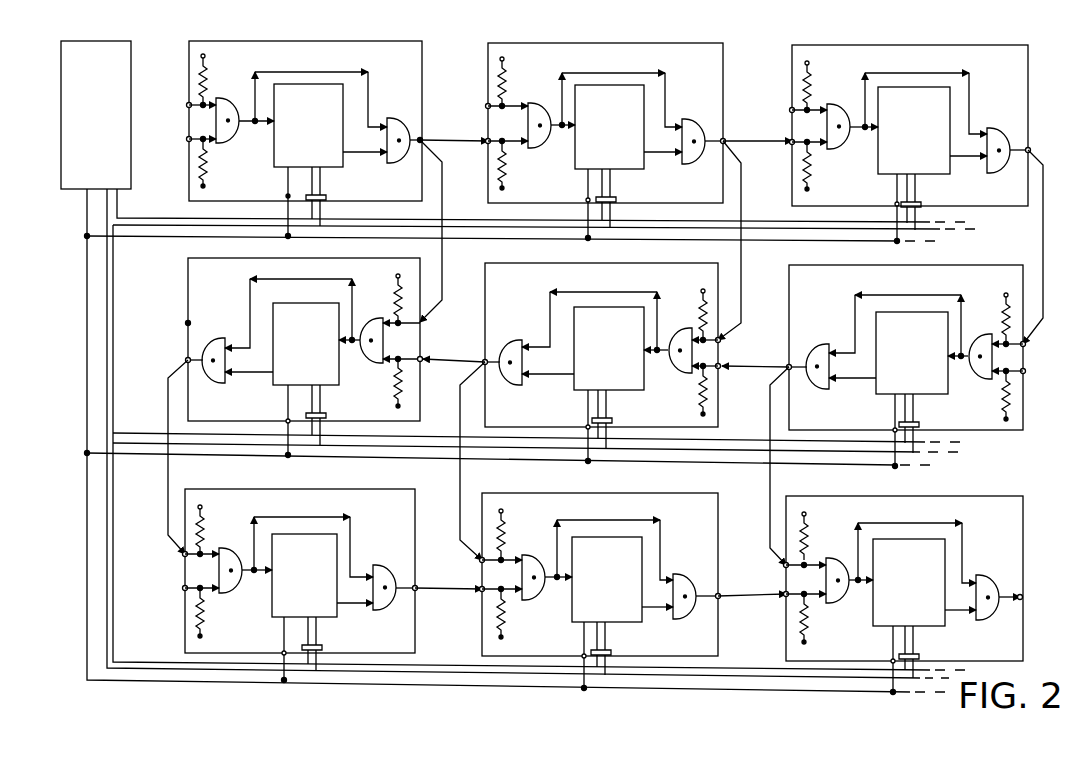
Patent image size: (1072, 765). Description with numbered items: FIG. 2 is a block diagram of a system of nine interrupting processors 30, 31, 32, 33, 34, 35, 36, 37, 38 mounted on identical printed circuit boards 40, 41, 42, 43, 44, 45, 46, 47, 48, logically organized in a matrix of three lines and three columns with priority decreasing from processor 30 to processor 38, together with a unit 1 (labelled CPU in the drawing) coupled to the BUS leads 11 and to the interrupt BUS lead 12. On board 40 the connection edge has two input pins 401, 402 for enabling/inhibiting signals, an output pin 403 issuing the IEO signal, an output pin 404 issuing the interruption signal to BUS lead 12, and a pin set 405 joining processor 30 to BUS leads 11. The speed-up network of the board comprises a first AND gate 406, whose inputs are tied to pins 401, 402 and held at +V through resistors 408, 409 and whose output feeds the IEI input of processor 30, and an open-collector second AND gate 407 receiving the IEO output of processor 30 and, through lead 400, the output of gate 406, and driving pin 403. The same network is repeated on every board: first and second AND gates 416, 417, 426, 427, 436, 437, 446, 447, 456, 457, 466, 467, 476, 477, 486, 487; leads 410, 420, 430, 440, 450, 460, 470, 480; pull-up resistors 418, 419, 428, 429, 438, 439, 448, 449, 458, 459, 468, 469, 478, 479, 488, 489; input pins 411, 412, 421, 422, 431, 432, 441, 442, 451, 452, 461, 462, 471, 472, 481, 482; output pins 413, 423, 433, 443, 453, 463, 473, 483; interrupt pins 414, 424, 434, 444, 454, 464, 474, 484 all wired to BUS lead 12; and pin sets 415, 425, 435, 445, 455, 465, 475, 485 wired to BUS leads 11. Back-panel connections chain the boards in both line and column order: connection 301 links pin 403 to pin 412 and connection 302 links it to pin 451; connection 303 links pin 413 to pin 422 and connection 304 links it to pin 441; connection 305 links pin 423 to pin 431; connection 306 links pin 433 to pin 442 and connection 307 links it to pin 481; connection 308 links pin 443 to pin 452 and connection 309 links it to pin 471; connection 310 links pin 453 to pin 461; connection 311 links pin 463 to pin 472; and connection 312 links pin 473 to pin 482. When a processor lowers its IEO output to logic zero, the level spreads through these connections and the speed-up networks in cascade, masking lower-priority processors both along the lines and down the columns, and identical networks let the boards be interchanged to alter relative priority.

The CPU 1 is at (76, 191).
The BUS leads 11 is at (140, 218).
The BUS lead 12 is at (135, 238).
The interrupting processor 30 is at (273, 139).
The interrupting processor 31 is at (572, 157).
The interrupting processor 32 is at (876, 157).
The interrupting processor 33 is at (875, 394).
The interrupting processor 34 is at (572, 390).
The interrupting processor 35 is at (270, 385).
The interrupting processor 36 is at (270, 608).
The interrupting processor 37 is at (570, 614).
The interrupting processor 38 is at (872, 612).
The printed circuit board 40 is at (188, 51).
The printed circuit board 41 is at (488, 55).
The printed circuit board 42 is at (792, 55).
The printed circuit board 43 is at (789, 291).
The printed circuit board 44 is at (485, 291).
The printed circuit board 45 is at (187, 280).
The printed circuit board 46 is at (196, 491).
The printed circuit board 47 is at (502, 492).
The printed circuit board 48 is at (821, 494).
The connection 301 is at (454, 129).
The connection 302 is at (444, 249).
The connection 303 is at (757, 133).
The connection 304 is at (742, 258).
The connection 305 is at (1043, 237).
The connection 306 is at (755, 392).
The connection 307 is at (762, 475).
The connection 308 is at (458, 395).
The connection 309 is at (457, 476).
The connection 310 is at (168, 408).
The connection 311 is at (445, 595).
The connection 312 is at (748, 601).
The lead 400 is at (339, 72).
The input pin 401 is at (188, 105).
The input pin 402 is at (188, 139).
The output pin 403 is at (431, 136).
The output pin 404 is at (287, 196).
The input/output pin set 405 is at (327, 197).
The first AND gate 406 is at (233, 95).
The second AND gate 407 is at (395, 116).
The resistor 408 is at (208, 70).
The resistor 409 is at (210, 167).
The lead 410 is at (629, 73).
The input pin 411 is at (487, 104).
The input pin 412 is at (487, 144).
The output pin 413 is at (726, 137).
The output pin 414 is at (586, 200).
The input/output pin set 415 is at (612, 199).
The first AND gate 416 is at (533, 94).
The second AND gate 417 is at (691, 118).
The resistor 418 is at (515, 79).
The resistor 419 is at (512, 164).
The lead 420 is at (931, 73).
The input pin 421 is at (791, 108).
The input pin 422 is at (791, 145).
The output pin 423 is at (1030, 150).
The output pin 424 is at (895, 204).
The input/output pin set 425 is at (920, 202).
The first AND gate 426 is at (838, 100).
The second AND gate 427 is at (998, 126).
The resistor 428 is at (812, 83).
The resistor 429 is at (819, 165).
The lead 430 is at (930, 295).
The input pin 431 is at (1027, 345).
The input pin 432 is at (1027, 372).
The output pin 433 is at (787, 366).
The output pin 434 is at (894, 428).
The input/output pin set 435 is at (920, 424).
The first AND gate 436 is at (988, 331).
The second AND gate 437 is at (813, 351).
The resistor 438 is at (1003, 310).
The resistor 439 is at (1000, 405).
The lead 440 is at (627, 292).
The input pin 441 is at (721, 340).
The input pin 442 is at (755, 371).
The output pin 443 is at (483, 360).
The output pin 444 is at (586, 425).
The input/output pin set 445 is at (610, 420).
The first AND gate 446 is at (688, 328).
The second AND gate 447 is at (511, 341).
The resistor 448 is at (699, 305).
The resistor 449 is at (698, 398).
The lead 450 is at (310, 283).
The input pin 451 is at (423, 321).
The input pin 452 is at (452, 371).
The output pin 453 is at (186, 360).
The output pin 454 is at (286, 419).
The input/output pin set 455 is at (324, 414).
The first AND gate 456 is at (386, 313).
The second AND gate 457 is at (222, 337).
The resistor 458 is at (396, 301).
The resistor 459 is at (393, 384).
The lead 460 is at (322, 517).
The input pin 461 is at (184, 554).
The input pin 462 is at (184, 588).
The output pin 463 is at (418, 588).
The output pin 464 is at (283, 652).
The input/output pin set 465 is at (320, 646).
The first AND gate 466 is at (232, 543).
The second AND gate 467 is at (385, 565).
The resistor 468 is at (207, 523).
The resistor 469 is at (208, 607).
The lead 470 is at (627, 520).
The input pin 471 is at (479, 560).
The input pin 472 is at (481, 592).
The output pin 473 is at (720, 595).
The output pin 474 is at (583, 655).
The input/output pin set 475 is at (610, 652).
The first AND gate 476 is at (535, 552).
The second AND gate 477 is at (686, 573).
The resistor 478 is at (509, 525).
The resistor 479 is at (507, 612).
The lead 480 is at (932, 523).
The input pin 481 is at (784, 566).
The input pin 482 is at (785, 596).
The output pin 483 is at (1030, 606).
The output pin 484 is at (891, 661).
The input/output pin set 485 is at (920, 656).
The first AND gate 486 is at (838, 555).
The second AND gate 487 is at (990, 575).
The resistor 488 is at (810, 531).
The resistor 489 is at (810, 618).